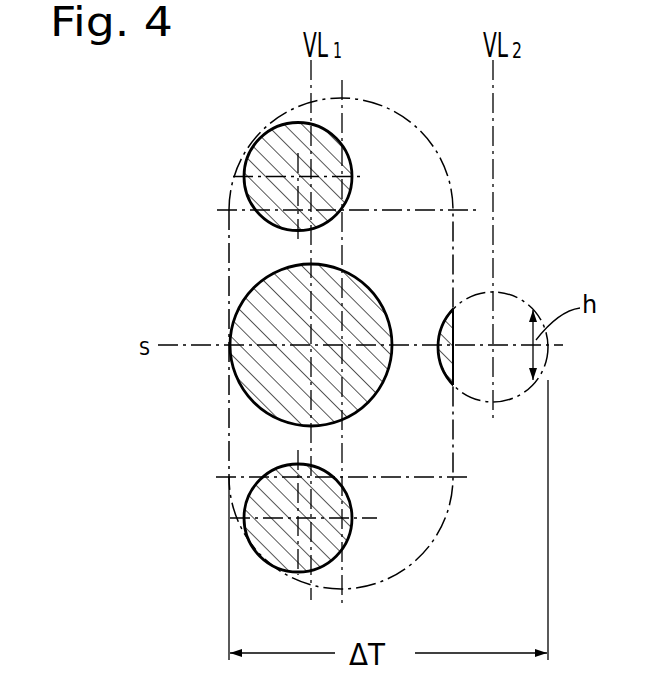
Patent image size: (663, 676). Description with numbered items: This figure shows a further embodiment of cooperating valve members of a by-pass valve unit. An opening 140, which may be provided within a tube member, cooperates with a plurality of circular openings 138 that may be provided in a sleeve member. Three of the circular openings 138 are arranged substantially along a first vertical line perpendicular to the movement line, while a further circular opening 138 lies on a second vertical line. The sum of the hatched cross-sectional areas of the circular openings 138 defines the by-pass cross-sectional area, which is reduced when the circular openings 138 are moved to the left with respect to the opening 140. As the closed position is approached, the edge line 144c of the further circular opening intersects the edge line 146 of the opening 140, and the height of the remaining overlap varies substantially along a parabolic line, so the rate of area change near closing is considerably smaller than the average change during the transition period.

The circular openings 138 is at (285, 225).
The opening 140 is at (432, 548).
The edge line 144c is at (547, 357).
The edge line 146 is at (228, 235).